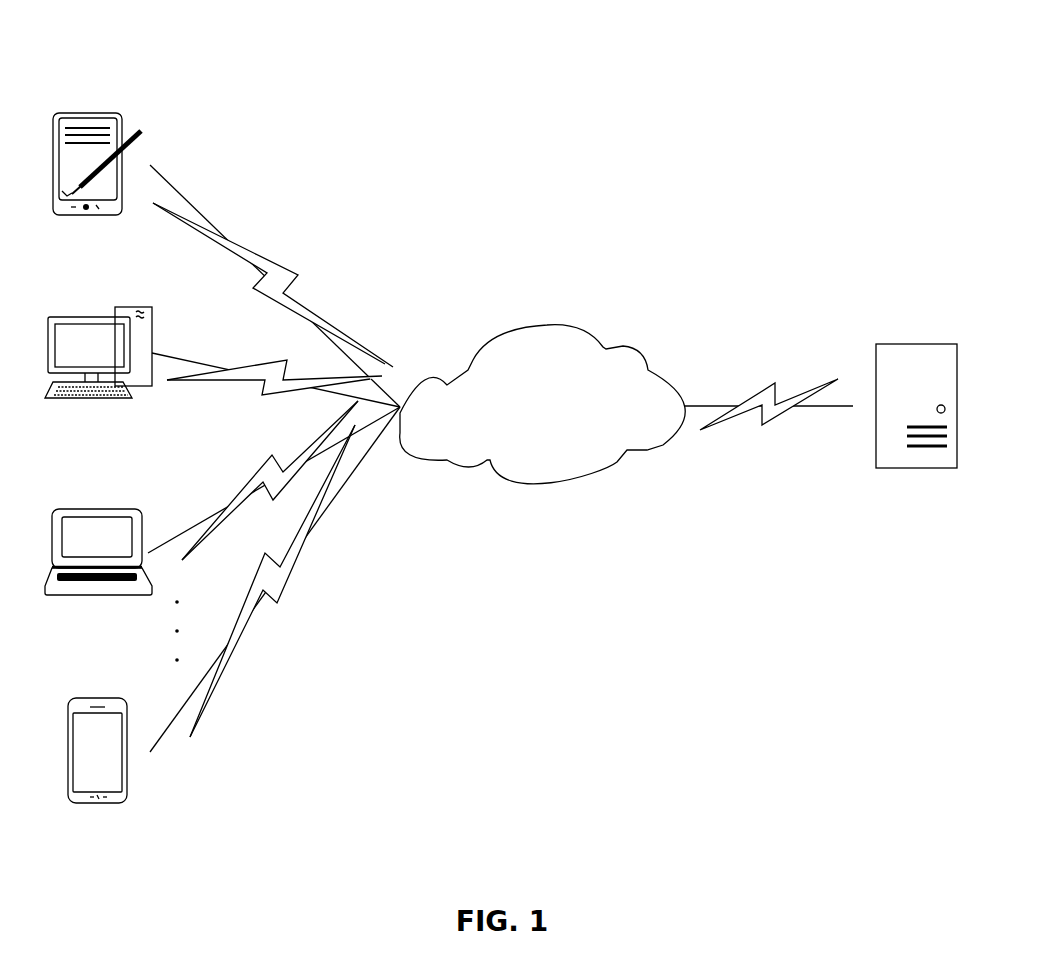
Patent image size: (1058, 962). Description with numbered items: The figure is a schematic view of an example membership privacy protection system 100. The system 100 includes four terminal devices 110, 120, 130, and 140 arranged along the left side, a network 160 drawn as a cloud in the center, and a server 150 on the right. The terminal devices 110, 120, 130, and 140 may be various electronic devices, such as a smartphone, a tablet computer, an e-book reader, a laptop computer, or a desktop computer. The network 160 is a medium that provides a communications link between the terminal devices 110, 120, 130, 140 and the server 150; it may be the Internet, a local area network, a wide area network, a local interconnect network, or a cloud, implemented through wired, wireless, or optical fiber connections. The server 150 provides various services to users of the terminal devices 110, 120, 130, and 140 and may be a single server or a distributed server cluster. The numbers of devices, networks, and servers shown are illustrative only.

The membership privacy protection system 100 is at (576, 75).
The terminal device 110 is at (118, 113).
The terminal device 120 is at (80, 317).
The terminal device 130 is at (88, 508).
The terminal device 140 is at (92, 697).
The server 150 is at (923, 343).
The network 160 is at (562, 324).